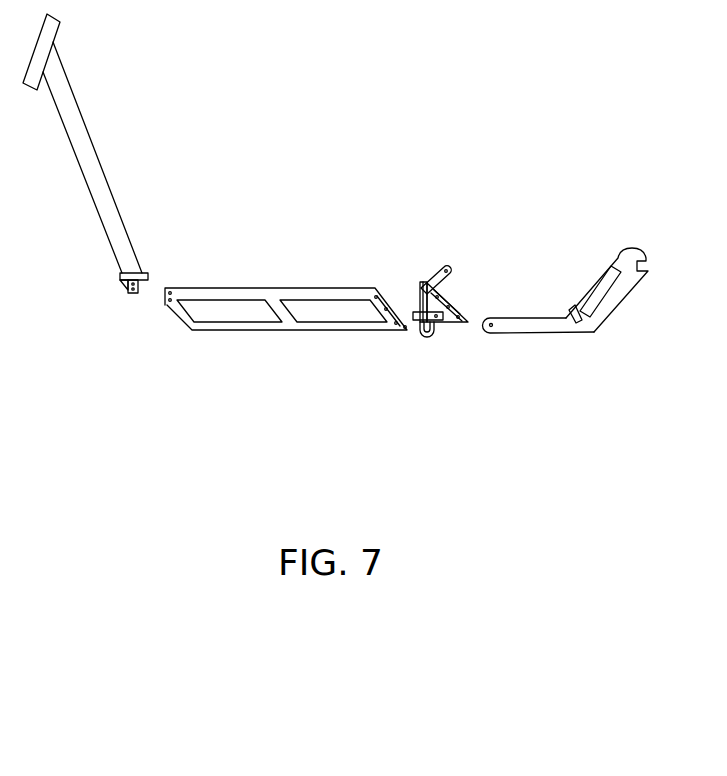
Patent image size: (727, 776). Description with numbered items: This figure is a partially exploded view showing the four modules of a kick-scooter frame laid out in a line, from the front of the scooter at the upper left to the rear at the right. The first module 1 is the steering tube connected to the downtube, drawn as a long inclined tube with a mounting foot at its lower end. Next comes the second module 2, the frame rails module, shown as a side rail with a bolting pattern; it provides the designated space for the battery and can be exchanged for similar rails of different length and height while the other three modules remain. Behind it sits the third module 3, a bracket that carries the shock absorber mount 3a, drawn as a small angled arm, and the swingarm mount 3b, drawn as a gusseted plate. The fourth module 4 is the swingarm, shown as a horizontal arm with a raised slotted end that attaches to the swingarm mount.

The first module 1 is at (98, 152).
The second module 2 is at (272, 286).
The third module 3 is at (447, 309).
The shock absorber mount 3a is at (418, 294).
The swingarm mount 3b is at (455, 303).
The fourth module 4 is at (580, 336).